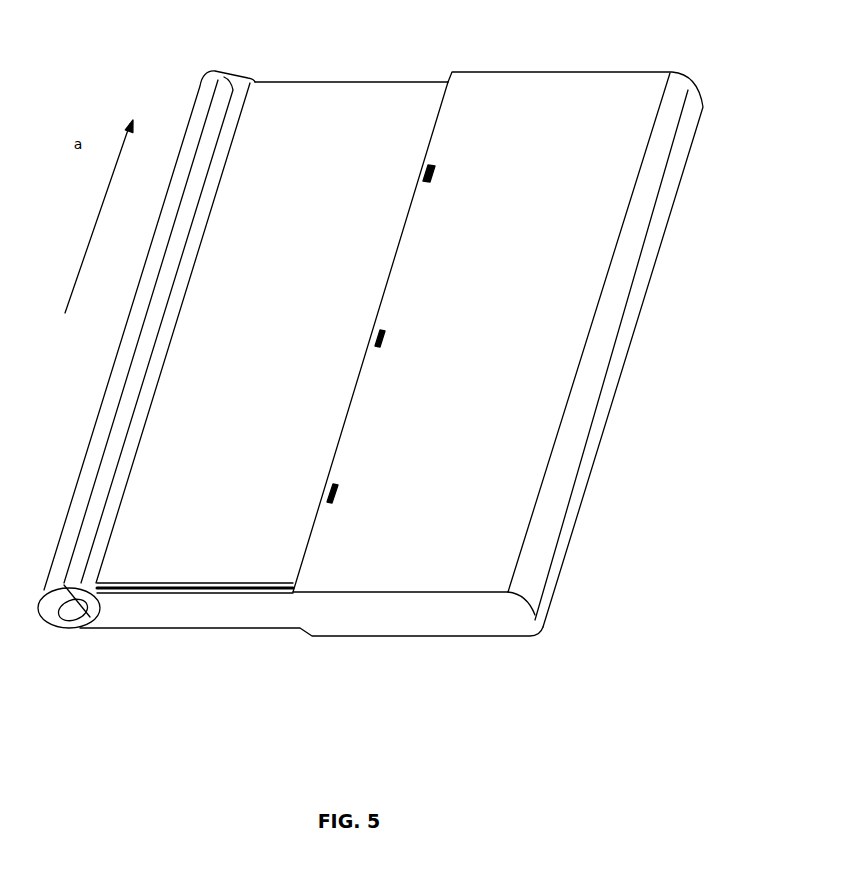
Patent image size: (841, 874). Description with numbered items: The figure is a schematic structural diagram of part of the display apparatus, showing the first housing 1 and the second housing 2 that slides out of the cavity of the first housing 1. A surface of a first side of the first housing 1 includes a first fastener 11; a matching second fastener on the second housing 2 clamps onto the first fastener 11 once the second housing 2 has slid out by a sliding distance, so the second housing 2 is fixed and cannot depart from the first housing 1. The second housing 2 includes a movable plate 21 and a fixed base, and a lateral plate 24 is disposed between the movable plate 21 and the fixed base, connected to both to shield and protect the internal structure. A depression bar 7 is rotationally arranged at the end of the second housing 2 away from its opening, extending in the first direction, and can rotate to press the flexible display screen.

The first housing 1 is at (568, 258).
The first fastener 11 is at (388, 338).
The depression bar 7 is at (373, 165).
The second housing 2 is at (290, 402).
The movable plate 21 is at (243, 527).
The lateral plate 24 is at (146, 380).